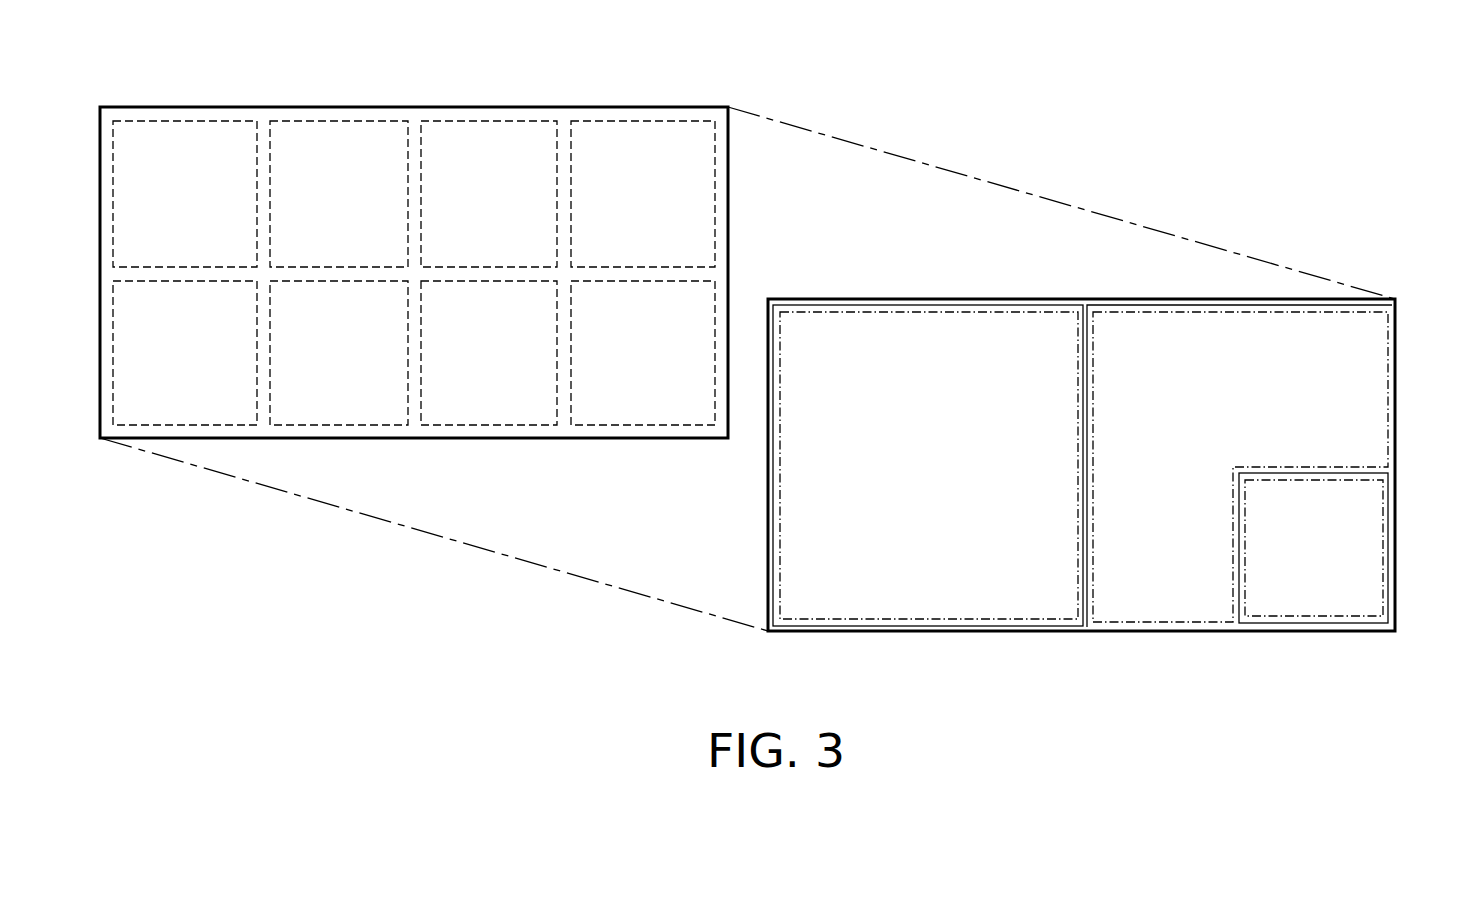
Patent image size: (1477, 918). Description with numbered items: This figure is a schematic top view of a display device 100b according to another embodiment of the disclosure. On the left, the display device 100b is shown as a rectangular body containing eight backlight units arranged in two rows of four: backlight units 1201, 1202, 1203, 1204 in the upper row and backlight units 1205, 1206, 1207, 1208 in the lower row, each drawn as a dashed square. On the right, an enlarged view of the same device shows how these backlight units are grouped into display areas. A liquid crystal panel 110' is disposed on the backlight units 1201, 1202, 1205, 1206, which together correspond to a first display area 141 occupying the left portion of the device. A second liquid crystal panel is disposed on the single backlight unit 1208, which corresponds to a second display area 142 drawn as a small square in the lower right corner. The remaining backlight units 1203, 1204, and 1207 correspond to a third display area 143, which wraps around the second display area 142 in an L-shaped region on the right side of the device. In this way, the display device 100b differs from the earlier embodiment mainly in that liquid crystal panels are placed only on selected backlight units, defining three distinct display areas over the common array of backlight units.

The display device 100b is at (155, 540).
The backlight unit 1201 is at (180, 138).
The backlight unit 1202 is at (338, 138).
The backlight unit 1203 is at (480, 138).
The backlight unit 1204 is at (622, 138).
The backlight unit 1205 is at (238, 408).
The backlight unit 1206 is at (348, 408).
The backlight unit 1207 is at (490, 408).
The backlight unit 1208 is at (647, 408).
The liquid crystal panel 110' is at (928, 431).
The first display area 141 is at (921, 311).
The second display area 142 is at (1293, 617).
The third display area 143 is at (1108, 311).